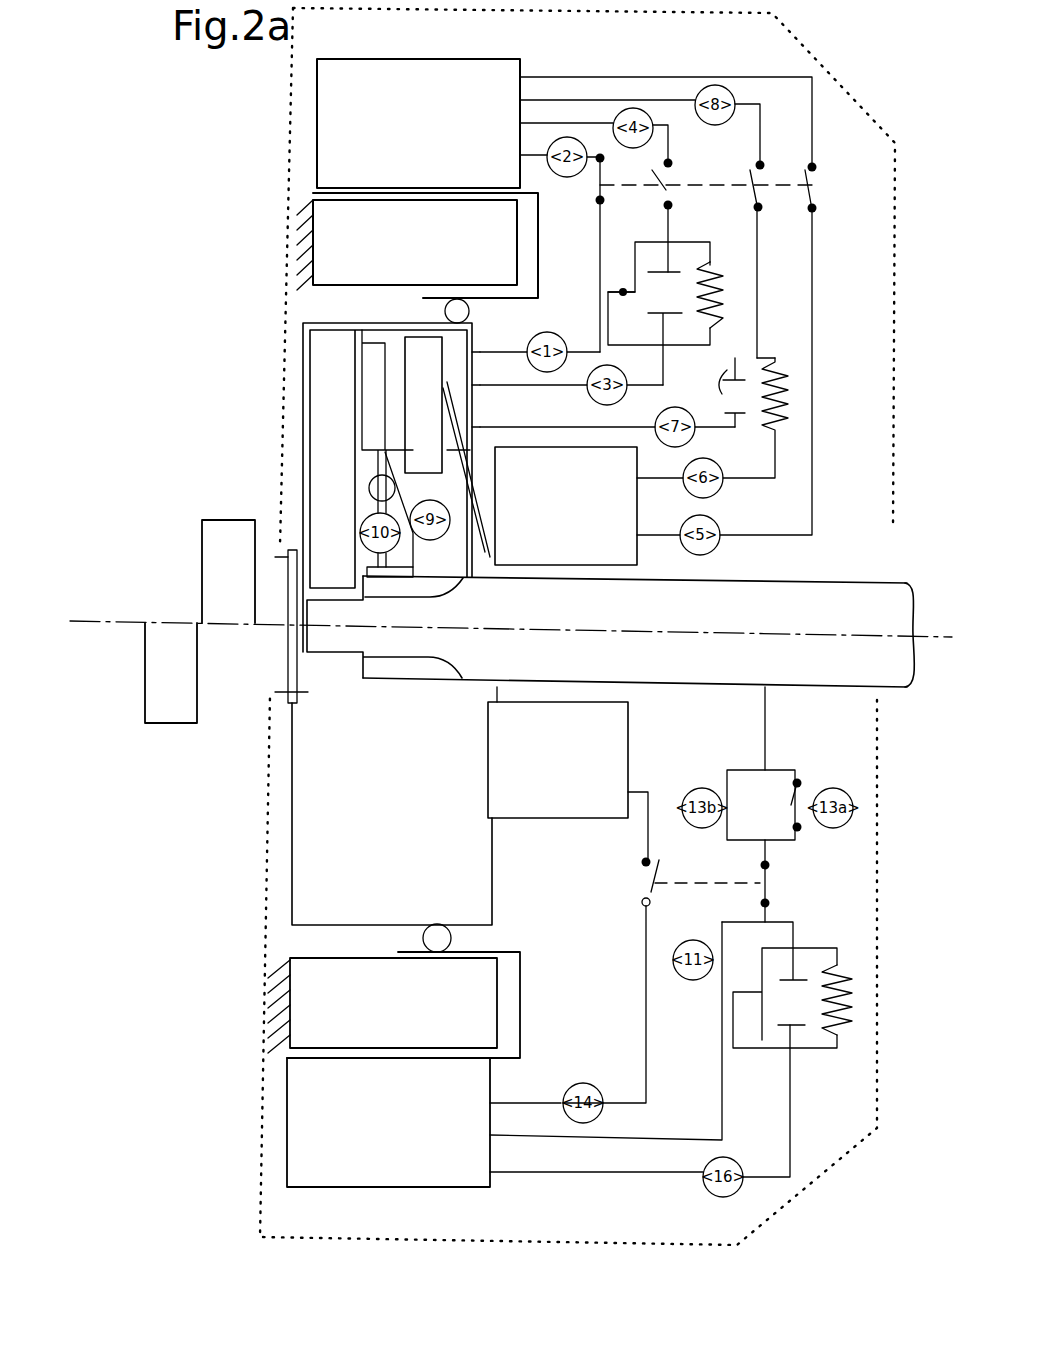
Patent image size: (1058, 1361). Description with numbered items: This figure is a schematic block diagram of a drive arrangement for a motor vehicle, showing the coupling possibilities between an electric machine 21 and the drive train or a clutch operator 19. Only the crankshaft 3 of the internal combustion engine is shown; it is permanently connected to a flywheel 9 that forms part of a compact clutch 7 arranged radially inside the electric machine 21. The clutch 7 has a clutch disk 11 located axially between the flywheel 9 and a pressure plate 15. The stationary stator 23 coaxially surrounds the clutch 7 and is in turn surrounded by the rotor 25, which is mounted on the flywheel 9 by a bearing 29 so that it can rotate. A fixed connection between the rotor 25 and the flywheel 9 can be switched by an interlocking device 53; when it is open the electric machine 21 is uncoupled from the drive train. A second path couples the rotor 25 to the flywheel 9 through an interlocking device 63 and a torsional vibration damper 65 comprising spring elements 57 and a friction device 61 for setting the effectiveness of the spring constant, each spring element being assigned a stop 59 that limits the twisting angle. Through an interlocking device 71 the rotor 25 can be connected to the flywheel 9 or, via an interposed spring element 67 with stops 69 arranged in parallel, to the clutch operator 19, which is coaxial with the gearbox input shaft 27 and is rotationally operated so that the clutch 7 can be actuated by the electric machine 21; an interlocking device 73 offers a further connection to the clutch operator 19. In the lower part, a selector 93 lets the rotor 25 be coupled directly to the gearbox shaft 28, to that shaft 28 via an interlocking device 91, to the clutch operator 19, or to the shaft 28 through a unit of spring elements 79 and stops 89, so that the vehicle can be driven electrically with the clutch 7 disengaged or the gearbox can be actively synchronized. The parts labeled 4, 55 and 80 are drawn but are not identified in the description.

The crankshaft 3 is at (270, 608).
The shaft 4 is at (888, 680).
The compact clutch 7 is at (327, 856).
The flywheel 9 is at (330, 428).
The clutch disk 11 is at (373, 384).
The pressure plate 15 is at (427, 357).
The clutch operator 19 is at (613, 487).
The electric machine 21 is at (289, 105).
The stator 23 is at (330, 244).
The rotor 25 is at (330, 159).
The gearbox input shaft 27 is at (858, 606).
The gearbox input shaft 28 is at (833, 597).
The bearing 29 is at (477, 312).
The interlocking device 53 is at (595, 186).
The relay 55 is at (670, 350).
The spring elements 57 is at (721, 298).
The stop 59 is at (673, 267).
The friction device 61 is at (622, 289).
The interlocking device 63 is at (650, 213).
The torsional vibration damper 65 is at (719, 263).
The spring element 67 is at (793, 394).
The stops 69 is at (720, 380).
The interlocking device 71 is at (748, 178).
The interlocking device 73 is at (818, 186).
The spring elements 79 is at (843, 976).
The relay 80 is at (745, 985).
The stops 89 is at (790, 995).
The interlocking device 91 is at (793, 803).
The selector 93 is at (770, 885).